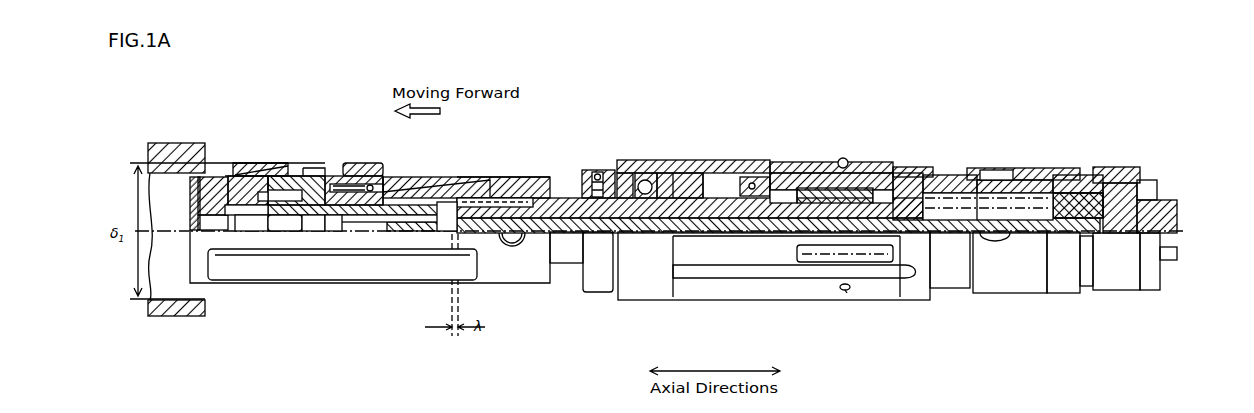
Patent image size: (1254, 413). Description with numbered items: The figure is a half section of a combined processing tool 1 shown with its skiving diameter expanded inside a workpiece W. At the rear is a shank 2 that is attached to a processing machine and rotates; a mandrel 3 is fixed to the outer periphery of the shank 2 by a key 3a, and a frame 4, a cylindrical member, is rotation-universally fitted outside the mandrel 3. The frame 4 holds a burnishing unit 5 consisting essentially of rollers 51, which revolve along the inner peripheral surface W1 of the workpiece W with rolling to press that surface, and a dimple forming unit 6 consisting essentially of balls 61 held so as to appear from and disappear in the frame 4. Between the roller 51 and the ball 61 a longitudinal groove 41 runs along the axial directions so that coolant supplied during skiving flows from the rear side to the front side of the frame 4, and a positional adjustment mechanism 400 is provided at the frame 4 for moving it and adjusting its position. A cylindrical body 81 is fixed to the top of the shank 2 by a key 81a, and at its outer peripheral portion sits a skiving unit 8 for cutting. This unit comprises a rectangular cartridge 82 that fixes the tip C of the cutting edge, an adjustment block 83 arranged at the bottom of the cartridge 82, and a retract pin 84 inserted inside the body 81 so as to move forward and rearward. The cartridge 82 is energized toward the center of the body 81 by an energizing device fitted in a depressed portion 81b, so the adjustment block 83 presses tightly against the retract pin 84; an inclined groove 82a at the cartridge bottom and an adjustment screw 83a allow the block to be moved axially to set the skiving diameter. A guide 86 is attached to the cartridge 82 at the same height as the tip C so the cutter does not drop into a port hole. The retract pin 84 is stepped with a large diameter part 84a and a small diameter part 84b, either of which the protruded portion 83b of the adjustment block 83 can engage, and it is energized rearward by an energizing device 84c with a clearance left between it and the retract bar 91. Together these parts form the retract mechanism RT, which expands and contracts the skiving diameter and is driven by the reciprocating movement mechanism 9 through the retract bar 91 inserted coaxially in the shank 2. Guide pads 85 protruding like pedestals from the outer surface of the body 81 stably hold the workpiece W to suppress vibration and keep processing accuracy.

The combined processing tool 1 is at (992, 127).
The shank 2 is at (1040, 166).
The mandrel 3 is at (812, 162).
The key 3a is at (896, 166).
The frame 4 is at (738, 162).
The burnishing unit 5 is at (829, 292).
The dimple forming unit 6 is at (866, 232).
The skiving unit 8 is at (318, 152).
The reciprocating movement mechanism 9 is at (1030, 253).
The longitudinal groove 41 is at (724, 270).
The rollers 51 is at (812, 259).
The balls 61 is at (846, 159).
The body 81 is at (512, 175).
The key 81a is at (492, 178).
The depressed portion 81b is at (245, 164).
The cartridge 82 is at (308, 168).
The groove 82a is at (253, 164).
The adjustment block 83 is at (283, 212).
The adjustment screw 83a is at (390, 190).
The protruded portion 83b is at (295, 213).
The retract pin 84 is at (363, 231).
The large diameter part 84a is at (273, 221).
The small diameter part 84b is at (330, 218).
The energizing device 84c is at (454, 187).
The guide pads 85 is at (237, 268).
The guide 86 is at (362, 165).
The retract bar 91 is at (638, 240).
The positional adjustment mechanism 400 is at (611, 164).
The tip C is at (280, 164).
The retract mechanism RT is at (289, 253).
The workpiece W is at (181, 144).
The inner peripheral surface W1 is at (194, 178).